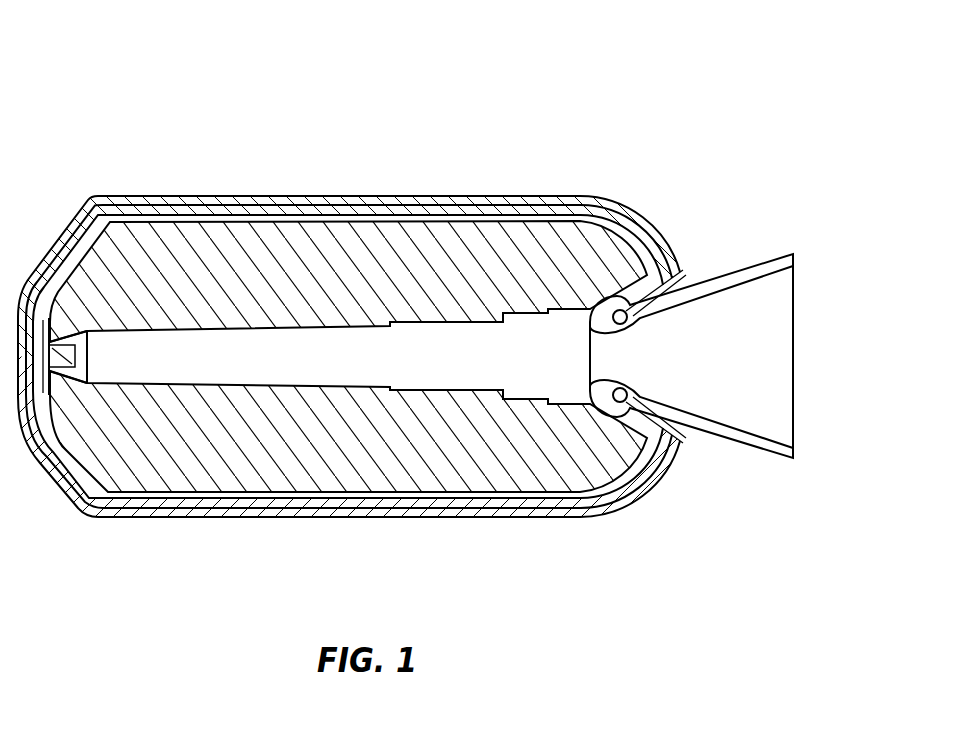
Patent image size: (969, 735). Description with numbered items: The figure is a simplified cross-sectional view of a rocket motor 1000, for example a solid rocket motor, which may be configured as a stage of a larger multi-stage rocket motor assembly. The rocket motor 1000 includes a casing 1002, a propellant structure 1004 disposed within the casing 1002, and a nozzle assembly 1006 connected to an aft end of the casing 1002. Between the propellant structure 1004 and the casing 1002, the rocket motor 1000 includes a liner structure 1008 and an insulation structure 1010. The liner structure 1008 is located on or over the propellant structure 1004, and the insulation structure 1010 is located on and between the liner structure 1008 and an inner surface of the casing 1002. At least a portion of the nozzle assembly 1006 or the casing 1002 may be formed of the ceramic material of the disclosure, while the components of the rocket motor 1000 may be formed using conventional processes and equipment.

The rocket motor 1000 is at (447, 155).
The casing 1002 is at (103, 196).
The propellant structure 1004 is at (400, 468).
The nozzle assembly 1006 is at (737, 265).
The liner structure 1008 is at (278, 197).
The insulation structure 1010 is at (208, 197).